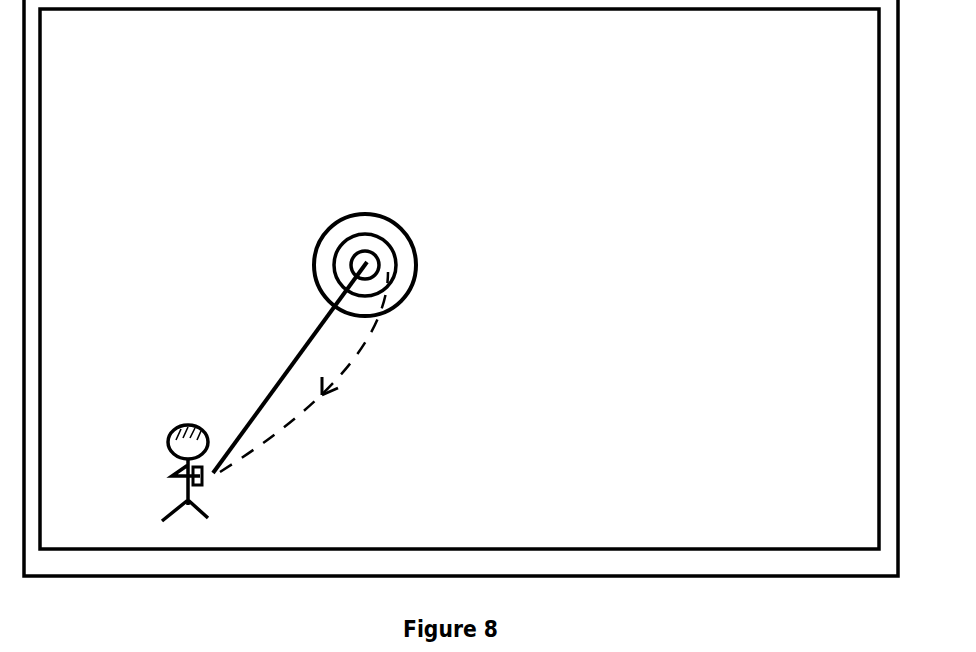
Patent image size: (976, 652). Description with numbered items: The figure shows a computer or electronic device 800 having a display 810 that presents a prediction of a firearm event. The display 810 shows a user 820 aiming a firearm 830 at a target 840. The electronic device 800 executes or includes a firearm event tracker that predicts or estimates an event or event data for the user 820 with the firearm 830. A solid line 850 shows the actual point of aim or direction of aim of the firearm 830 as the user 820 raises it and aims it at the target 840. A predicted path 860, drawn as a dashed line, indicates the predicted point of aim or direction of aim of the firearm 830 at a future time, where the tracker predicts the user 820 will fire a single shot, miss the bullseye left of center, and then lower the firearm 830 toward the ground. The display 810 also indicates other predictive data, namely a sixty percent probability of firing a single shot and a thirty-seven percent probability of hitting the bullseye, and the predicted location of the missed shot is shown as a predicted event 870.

The computer or electronic device 800 is at (897, 67).
The display 810 is at (845, 58).
The user 820 is at (175, 427).
The firearm 830 is at (200, 485).
The target 840 is at (325, 232).
The solid line 850 is at (278, 365).
The predicted path 860 is at (361, 349).
The predicted event 870 is at (365, 265).